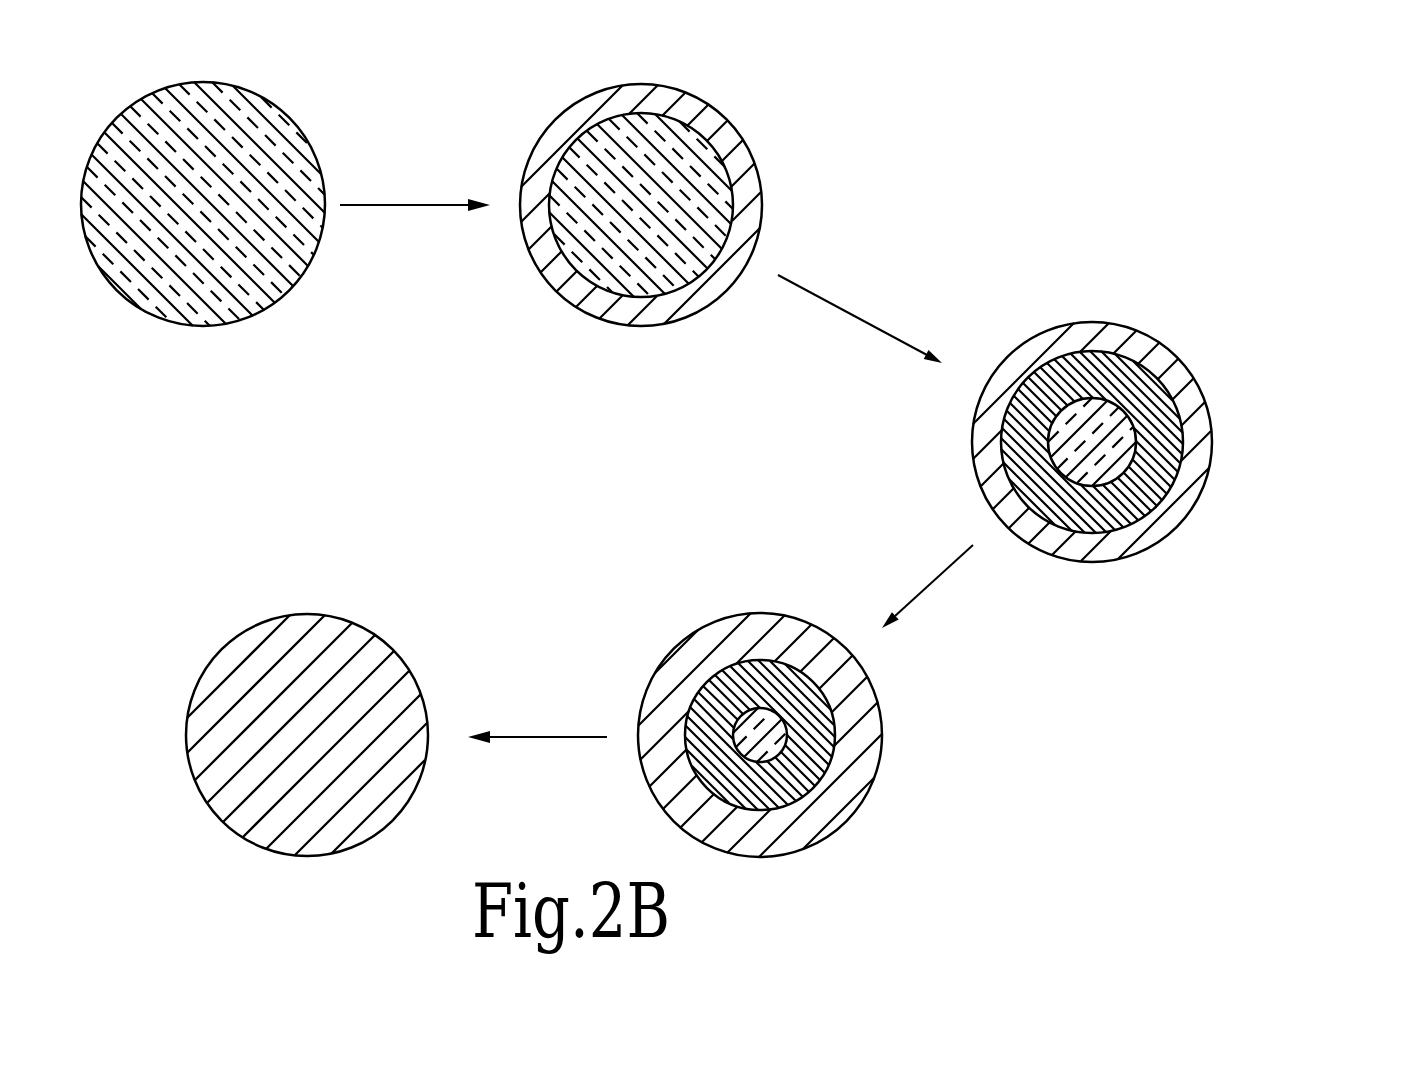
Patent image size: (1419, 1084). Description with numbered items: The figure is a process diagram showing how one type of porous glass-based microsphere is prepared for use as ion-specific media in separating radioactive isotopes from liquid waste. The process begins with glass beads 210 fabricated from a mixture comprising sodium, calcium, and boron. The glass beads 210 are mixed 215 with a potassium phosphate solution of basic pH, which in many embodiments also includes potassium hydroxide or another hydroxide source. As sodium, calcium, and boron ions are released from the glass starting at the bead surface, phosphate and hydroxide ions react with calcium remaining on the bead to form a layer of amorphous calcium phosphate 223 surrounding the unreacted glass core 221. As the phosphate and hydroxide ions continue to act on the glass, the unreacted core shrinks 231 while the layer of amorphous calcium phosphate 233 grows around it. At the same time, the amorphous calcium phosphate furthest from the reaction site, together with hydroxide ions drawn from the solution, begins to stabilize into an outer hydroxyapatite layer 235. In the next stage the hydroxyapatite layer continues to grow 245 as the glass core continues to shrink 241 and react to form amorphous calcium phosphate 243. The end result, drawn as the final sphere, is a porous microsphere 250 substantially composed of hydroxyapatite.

The glass beads 210 is at (135, 308).
The mixing step 215 is at (430, 203).
The unreacted glass core 221 is at (698, 167).
The layer of amorphous calcium phosphate 223 is at (747, 192).
The shrinking unreacted core 231 is at (1125, 412).
The grown layer of amorphous calcium phosphate 233 is at (1163, 420).
The hydroxyapatite layer 235 is at (1197, 460).
The further shrunk glass core 241 is at (760, 733).
The amorphous calcium phosphate layer 243 is at (803, 767).
The growing hydroxyapatite layer 245 is at (867, 723).
The porous microsphere 250 is at (283, 687).